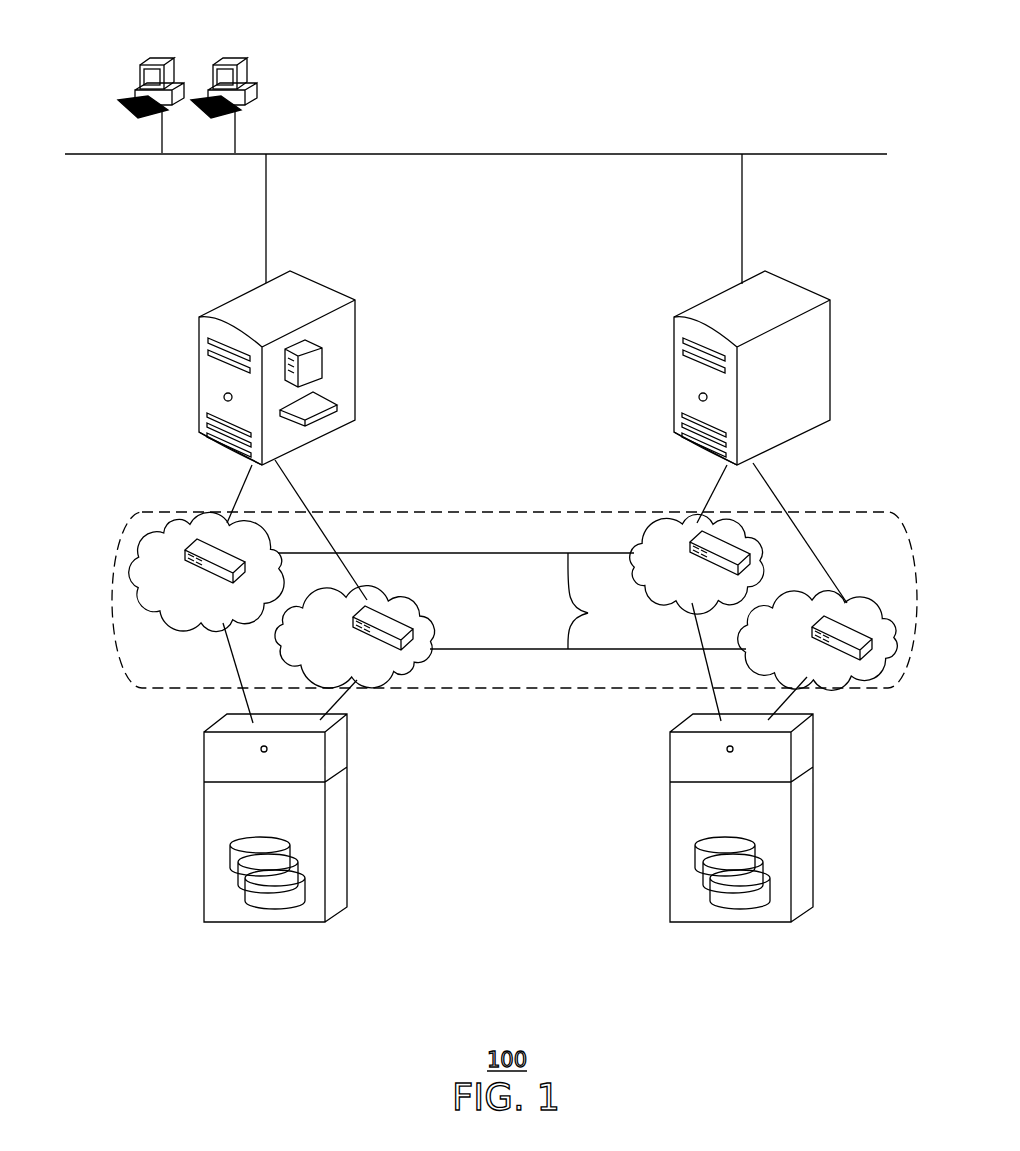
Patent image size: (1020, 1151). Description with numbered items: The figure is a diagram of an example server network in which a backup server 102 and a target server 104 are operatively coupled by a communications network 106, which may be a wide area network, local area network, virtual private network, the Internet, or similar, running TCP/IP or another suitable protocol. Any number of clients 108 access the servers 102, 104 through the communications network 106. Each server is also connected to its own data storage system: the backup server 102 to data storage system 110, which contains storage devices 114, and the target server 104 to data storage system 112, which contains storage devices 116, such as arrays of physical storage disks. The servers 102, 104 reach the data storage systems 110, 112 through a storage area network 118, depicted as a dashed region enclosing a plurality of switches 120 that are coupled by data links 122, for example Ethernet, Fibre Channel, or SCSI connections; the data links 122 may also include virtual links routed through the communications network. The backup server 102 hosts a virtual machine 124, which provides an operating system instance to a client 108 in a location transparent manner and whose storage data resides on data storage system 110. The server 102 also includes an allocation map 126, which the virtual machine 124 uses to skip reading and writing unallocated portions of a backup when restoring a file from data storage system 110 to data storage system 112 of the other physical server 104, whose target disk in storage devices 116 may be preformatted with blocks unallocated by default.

The backup server 102 is at (297, 292).
The target server 104 is at (780, 287).
The communications network 106 is at (562, 152).
The clients 108 is at (174, 59).
The data storage system 110 is at (204, 765).
The data storage system 112 is at (813, 745).
The storage devices 114 is at (230, 857).
The storage devices 116 is at (765, 862).
The storage area network 118 is at (415, 510).
The switches 120 is at (192, 540).
The data links 122 is at (512, 601).
The virtual machine 124 is at (322, 358).
The allocation map 126 is at (327, 403).